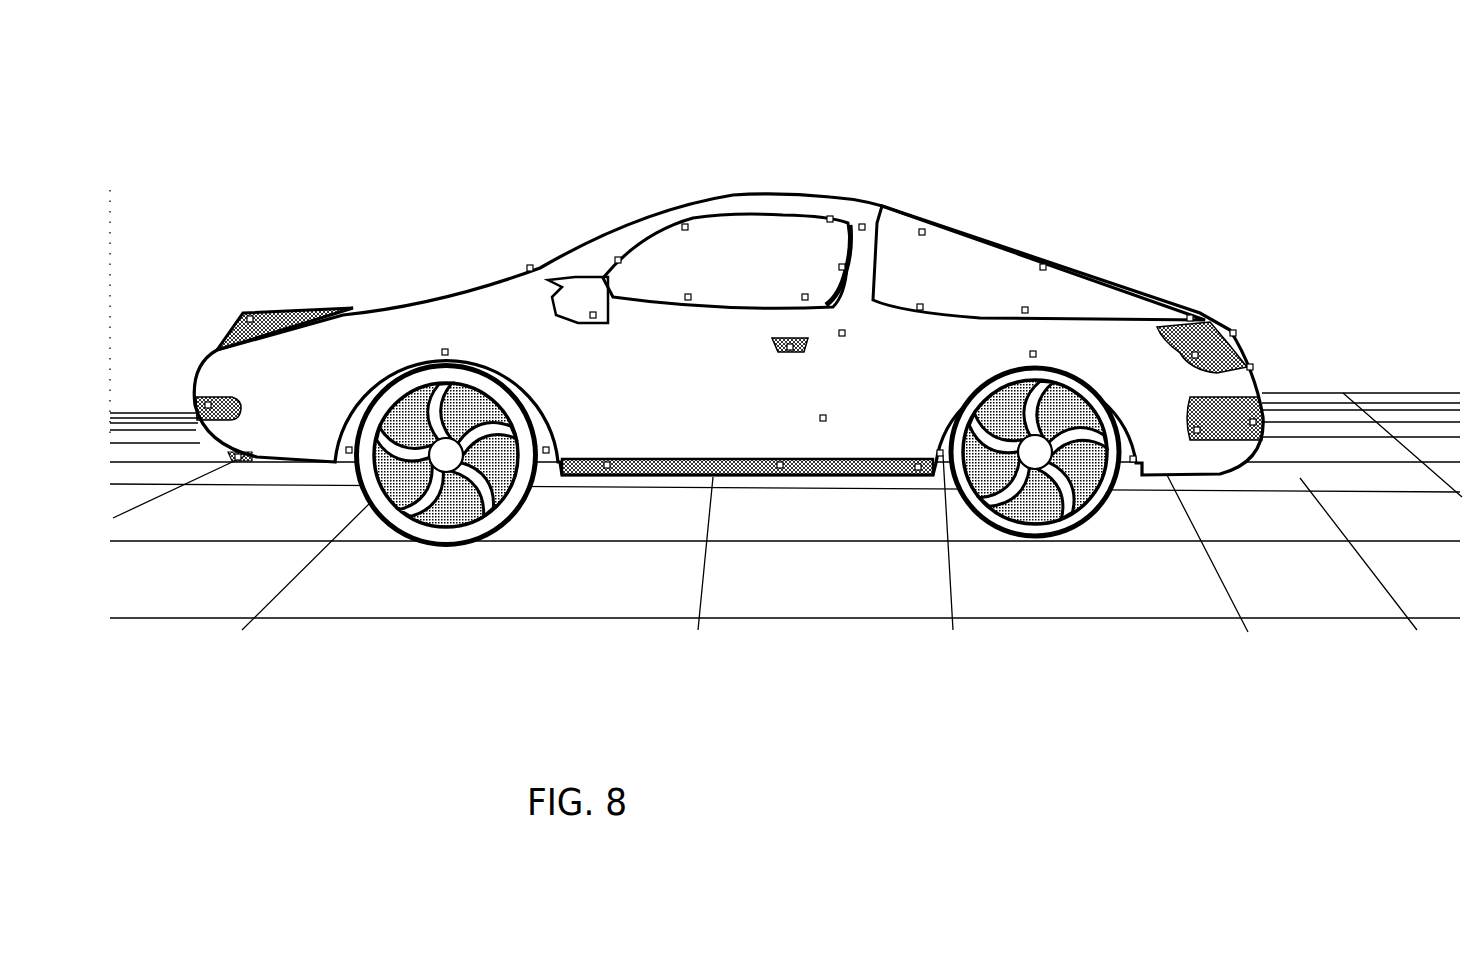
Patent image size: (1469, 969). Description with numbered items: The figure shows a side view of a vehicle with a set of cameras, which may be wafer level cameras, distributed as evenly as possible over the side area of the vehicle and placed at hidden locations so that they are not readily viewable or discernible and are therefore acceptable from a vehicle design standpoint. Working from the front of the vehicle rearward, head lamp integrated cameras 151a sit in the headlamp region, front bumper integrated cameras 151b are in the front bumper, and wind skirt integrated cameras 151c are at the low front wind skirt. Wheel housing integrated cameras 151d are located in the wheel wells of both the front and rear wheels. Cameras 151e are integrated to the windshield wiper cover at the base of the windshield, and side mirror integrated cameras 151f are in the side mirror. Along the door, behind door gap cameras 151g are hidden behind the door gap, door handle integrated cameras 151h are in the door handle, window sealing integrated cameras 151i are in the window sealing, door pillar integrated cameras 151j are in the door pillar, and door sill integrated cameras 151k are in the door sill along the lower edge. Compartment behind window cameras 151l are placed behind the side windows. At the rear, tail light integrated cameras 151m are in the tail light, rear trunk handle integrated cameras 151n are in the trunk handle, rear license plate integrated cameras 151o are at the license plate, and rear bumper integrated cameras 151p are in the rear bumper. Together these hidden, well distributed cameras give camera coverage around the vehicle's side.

The head lamp integrated cameras 151a is at (250, 318).
The front bumper integrated cameras 151b is at (197, 402).
The wind skirt integrated cameras 151c is at (238, 457).
The wheel housing integrated cameras 151d is at (545, 453).
The windshield wiper cover integrated cameras 151e is at (530, 267).
The side mirror integrated cameras 151f is at (593, 315).
The behind door gap cameras 151g is at (873, 310).
The door handle integrated cameras 151h is at (790, 352).
The window sealing integrated cameras 151i is at (830, 218).
The door pillar integrated cameras 151j is at (842, 267).
The door sill integrated cameras 151k is at (567, 615).
The compartment behind window cameras 151l is at (805, 297).
The tail light integrated cameras 151m is at (1195, 355).
The rear trunk handle integrated cameras 151n is at (1233, 333).
The rear license plate integrated cameras 151o is at (1250, 367).
The rear bumper integrated cameras 151p is at (1197, 430).